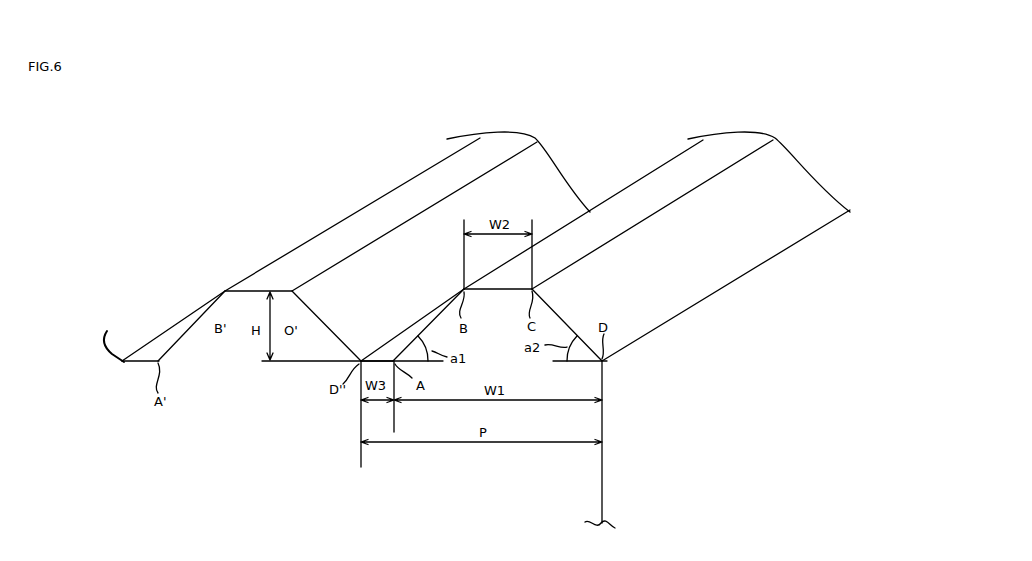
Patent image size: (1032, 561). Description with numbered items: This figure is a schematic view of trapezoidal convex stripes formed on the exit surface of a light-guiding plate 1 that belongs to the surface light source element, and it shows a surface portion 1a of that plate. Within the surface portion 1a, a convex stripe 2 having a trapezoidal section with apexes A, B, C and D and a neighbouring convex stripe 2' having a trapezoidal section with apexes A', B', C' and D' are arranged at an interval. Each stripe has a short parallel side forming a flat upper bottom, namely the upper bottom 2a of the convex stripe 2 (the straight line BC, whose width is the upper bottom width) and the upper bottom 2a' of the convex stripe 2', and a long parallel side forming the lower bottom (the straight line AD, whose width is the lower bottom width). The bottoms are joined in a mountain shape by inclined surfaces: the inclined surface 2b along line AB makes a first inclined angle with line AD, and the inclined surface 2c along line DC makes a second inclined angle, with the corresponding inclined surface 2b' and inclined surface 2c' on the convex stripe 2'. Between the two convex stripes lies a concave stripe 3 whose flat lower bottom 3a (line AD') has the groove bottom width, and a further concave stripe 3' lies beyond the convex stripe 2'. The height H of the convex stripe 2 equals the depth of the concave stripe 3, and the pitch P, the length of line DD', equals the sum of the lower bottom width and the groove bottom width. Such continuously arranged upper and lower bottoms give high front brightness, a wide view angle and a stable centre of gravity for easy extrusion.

The light-guiding plate 1 is at (361, 508).
The surface portion 1a is at (243, 216).
The convex stripe 2 is at (498, 310).
The convex stripe 2' is at (186, 352).
The upper bottom 2a is at (657, 210).
The upper bottom 2a' is at (356, 246).
The inclined surface 2b is at (412, 316).
The inclined surface 2b' is at (238, 276).
The inclined surface 2c is at (691, 285).
The inclined surface 2c' is at (414, 251).
The concave stripe 3 is at (377, 332).
The concave stripe 3' is at (164, 326).
The lower bottom of concave stripe 3a is at (399, 337).